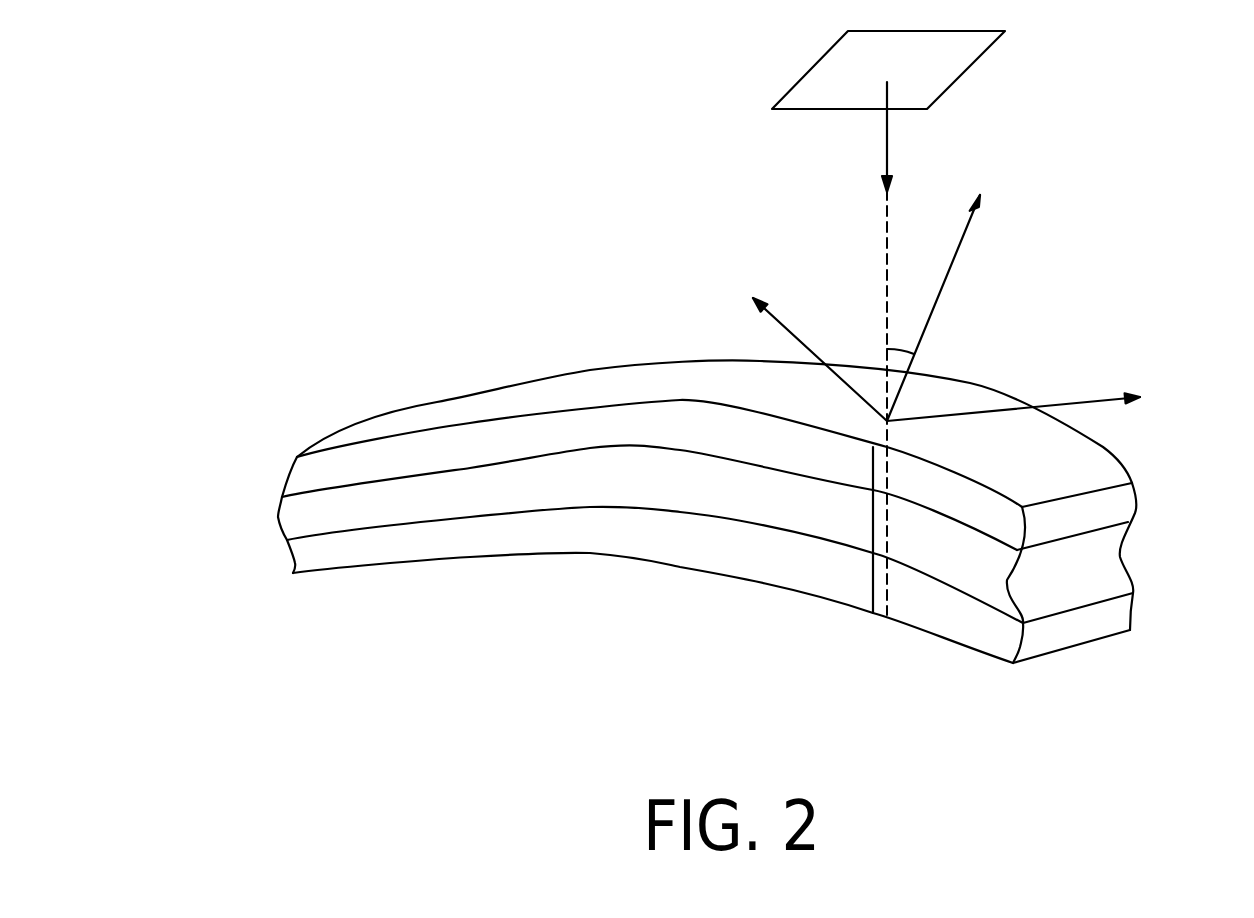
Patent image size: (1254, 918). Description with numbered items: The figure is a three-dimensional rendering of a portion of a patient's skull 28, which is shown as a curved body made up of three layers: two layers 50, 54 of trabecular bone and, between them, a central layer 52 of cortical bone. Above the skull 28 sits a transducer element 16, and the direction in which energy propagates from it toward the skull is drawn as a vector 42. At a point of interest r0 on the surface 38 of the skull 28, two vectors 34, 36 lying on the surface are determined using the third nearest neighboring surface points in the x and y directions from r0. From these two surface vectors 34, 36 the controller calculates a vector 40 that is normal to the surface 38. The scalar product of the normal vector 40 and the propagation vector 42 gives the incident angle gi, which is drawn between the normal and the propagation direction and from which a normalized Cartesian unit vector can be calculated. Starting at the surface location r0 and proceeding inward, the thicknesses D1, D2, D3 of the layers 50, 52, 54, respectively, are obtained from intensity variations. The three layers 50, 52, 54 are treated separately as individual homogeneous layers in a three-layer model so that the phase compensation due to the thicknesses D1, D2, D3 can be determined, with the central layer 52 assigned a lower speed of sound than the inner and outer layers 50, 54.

The transducer element 16 is at (984, 52).
The vector 42 is at (887, 135).
The vector 36 is at (795, 336).
The vector 40 is at (962, 240).
The vector 34 is at (1077, 403).
The surface 38 is at (1061, 482).
The skull 28 is at (1167, 550).
The layer of trabecular bone 50 is at (289, 475).
The layer of cortical bone 52 is at (279, 518).
The layer of trabecular bone 54 is at (296, 563).
The thickness D1 is at (873, 465).
The thickness D2 is at (873, 522).
The thickness D3 is at (873, 585).
The point of interest r0 is at (887, 421).
The incident angle gi is at (903, 340).